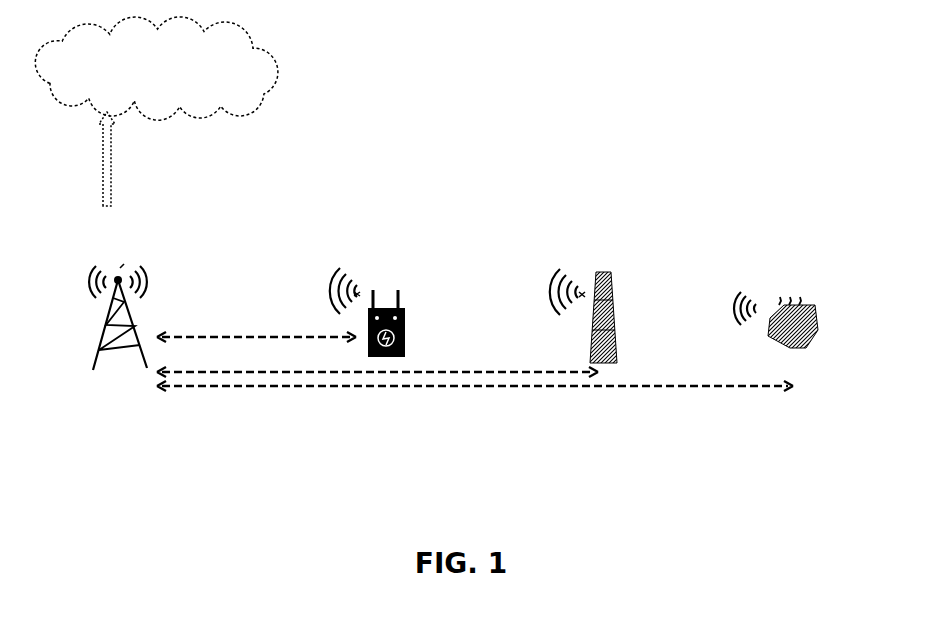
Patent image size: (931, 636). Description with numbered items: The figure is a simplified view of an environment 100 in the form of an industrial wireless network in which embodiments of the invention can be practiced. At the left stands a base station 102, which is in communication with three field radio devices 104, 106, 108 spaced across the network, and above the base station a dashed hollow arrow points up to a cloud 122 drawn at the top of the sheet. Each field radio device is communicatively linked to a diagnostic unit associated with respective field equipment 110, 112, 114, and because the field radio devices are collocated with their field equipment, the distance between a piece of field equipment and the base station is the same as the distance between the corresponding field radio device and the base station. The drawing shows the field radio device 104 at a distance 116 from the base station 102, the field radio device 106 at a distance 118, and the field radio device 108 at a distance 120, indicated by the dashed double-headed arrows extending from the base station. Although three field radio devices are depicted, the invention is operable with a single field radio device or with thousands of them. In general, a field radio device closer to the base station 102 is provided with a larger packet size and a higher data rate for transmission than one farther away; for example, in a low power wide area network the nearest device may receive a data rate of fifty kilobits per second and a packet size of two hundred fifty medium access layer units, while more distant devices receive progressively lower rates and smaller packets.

The environment 100 is at (461, 447).
The base station 102 is at (103, 353).
The field radio device 104 is at (347, 280).
The field radio device 106 is at (563, 291).
The field radio device 108 is at (757, 312).
The field equipment 110 is at (410, 307).
The field equipment 112 is at (603, 287).
The field equipment 114 is at (793, 320).
The distance 116 is at (227, 338).
The distance 118 is at (417, 371).
The distance 120 is at (643, 385).
The network cloud 122 is at (156, 111).